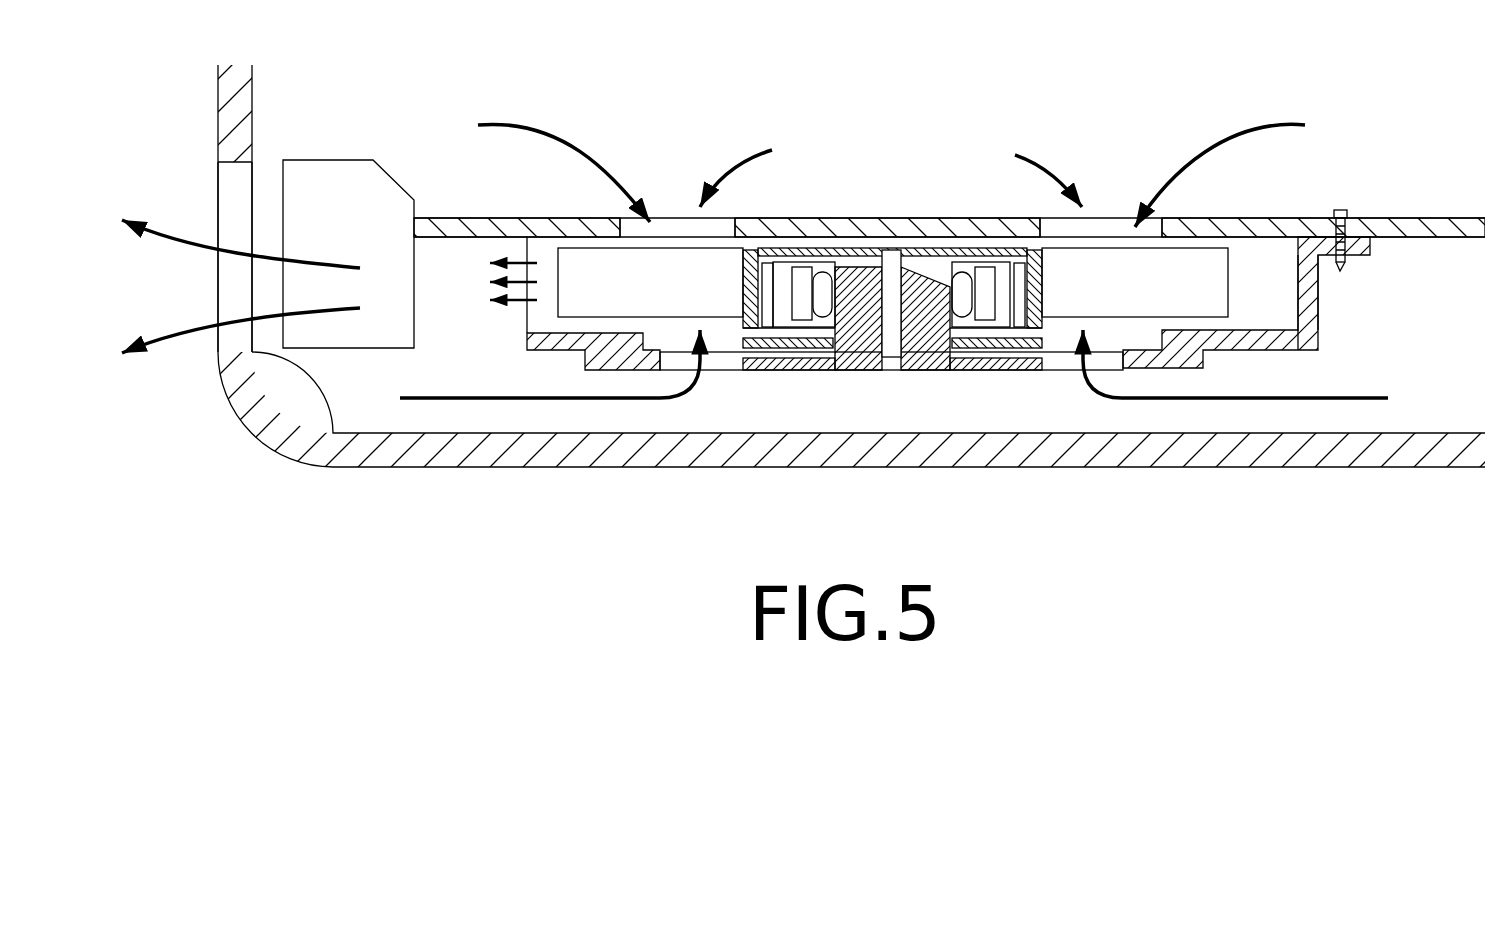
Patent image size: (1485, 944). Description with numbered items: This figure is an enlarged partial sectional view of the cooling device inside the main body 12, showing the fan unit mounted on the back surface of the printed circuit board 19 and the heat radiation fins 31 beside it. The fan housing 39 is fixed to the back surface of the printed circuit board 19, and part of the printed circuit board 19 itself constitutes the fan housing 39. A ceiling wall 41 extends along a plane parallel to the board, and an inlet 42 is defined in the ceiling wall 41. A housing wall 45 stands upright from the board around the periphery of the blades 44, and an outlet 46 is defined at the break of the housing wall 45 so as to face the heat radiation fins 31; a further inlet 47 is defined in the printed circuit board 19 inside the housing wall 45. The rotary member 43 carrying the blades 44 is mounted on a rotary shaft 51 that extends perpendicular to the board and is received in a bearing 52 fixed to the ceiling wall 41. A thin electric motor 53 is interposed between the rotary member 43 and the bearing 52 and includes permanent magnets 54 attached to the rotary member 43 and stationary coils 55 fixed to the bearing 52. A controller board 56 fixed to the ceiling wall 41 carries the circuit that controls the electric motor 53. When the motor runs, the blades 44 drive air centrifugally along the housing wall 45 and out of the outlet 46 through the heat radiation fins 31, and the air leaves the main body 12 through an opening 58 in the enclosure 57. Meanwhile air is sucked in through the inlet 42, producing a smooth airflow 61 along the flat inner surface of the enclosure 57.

The main body 12 is at (282, 446).
The printed circuit board 19 is at (1390, 218).
The heat radiation fins 31 is at (367, 160).
The fan housing 39 is at (1320, 334).
The ceiling wall 41 is at (585, 372).
The inlet 42 is at (743, 367).
The rotary member 43 is at (740, 266).
The blades 44 is at (655, 248).
The housing wall 45 is at (1318, 290).
The outlet 46 is at (527, 318).
The inlet 47 is at (655, 235).
The rotary shaft 51 is at (928, 358).
The bearing 52 is at (890, 358).
The electric motor 53 is at (869, 254).
The permanent magnets 54 is at (765, 252).
The stationary coils 55 is at (830, 272).
The controller board 56 is at (988, 358).
The enclosure 57 is at (232, 377).
The opening 58 is at (218, 188).
The airflow 61 is at (432, 393).